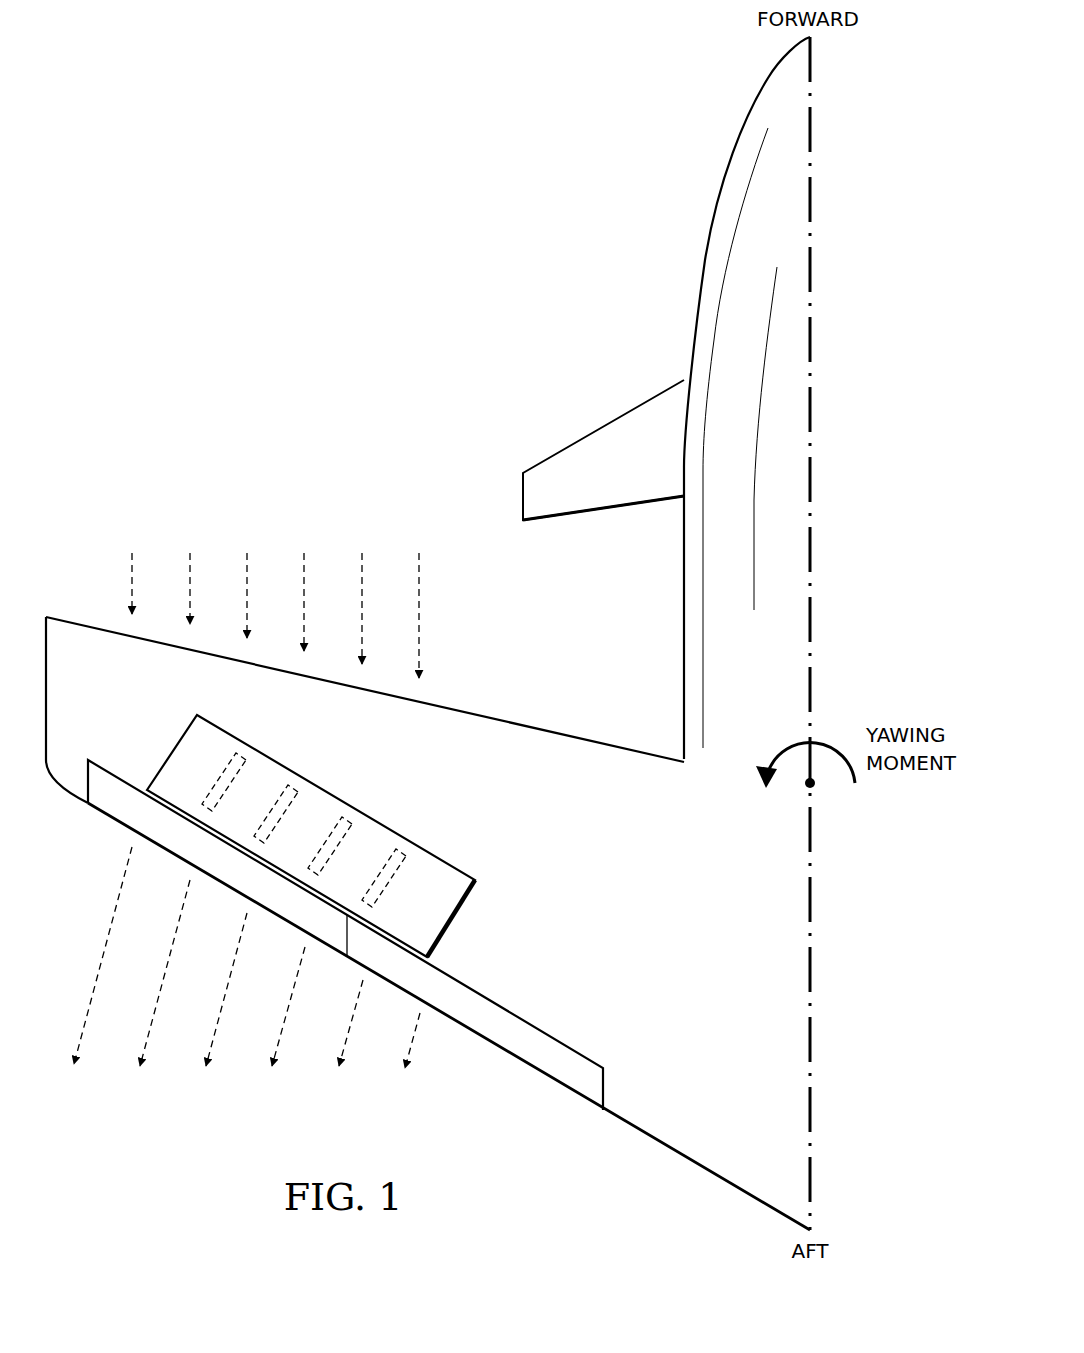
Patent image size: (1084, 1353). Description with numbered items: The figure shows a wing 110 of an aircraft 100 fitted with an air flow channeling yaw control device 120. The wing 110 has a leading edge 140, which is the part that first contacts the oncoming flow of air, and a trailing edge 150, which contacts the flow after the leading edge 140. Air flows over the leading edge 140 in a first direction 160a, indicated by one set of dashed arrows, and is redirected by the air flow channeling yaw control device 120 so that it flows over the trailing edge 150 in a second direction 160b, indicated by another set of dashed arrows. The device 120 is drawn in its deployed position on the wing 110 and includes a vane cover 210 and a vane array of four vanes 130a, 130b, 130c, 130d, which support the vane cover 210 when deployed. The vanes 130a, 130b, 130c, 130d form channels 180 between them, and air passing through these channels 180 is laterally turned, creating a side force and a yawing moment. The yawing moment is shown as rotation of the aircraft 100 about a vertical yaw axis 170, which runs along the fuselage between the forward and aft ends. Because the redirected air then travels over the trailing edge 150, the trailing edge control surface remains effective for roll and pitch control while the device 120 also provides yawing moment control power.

The aircraft 100 is at (735, 160).
The wing 110 is at (95, 626).
The air flow channeling yaw control device 120 is at (464, 908).
The vane 130a is at (210, 790).
The vane 130b is at (268, 806).
The vane 130c is at (340, 848).
The vane 130d is at (398, 865).
The leading edge 140 is at (470, 713).
The trailing edge 150 is at (102, 812).
The first direction 160a is at (190, 533).
The second direction 160b is at (132, 1080).
The yaw axis 170 is at (812, 128).
The channels 180 is at (257, 777).
The vane cover 210 is at (432, 930).